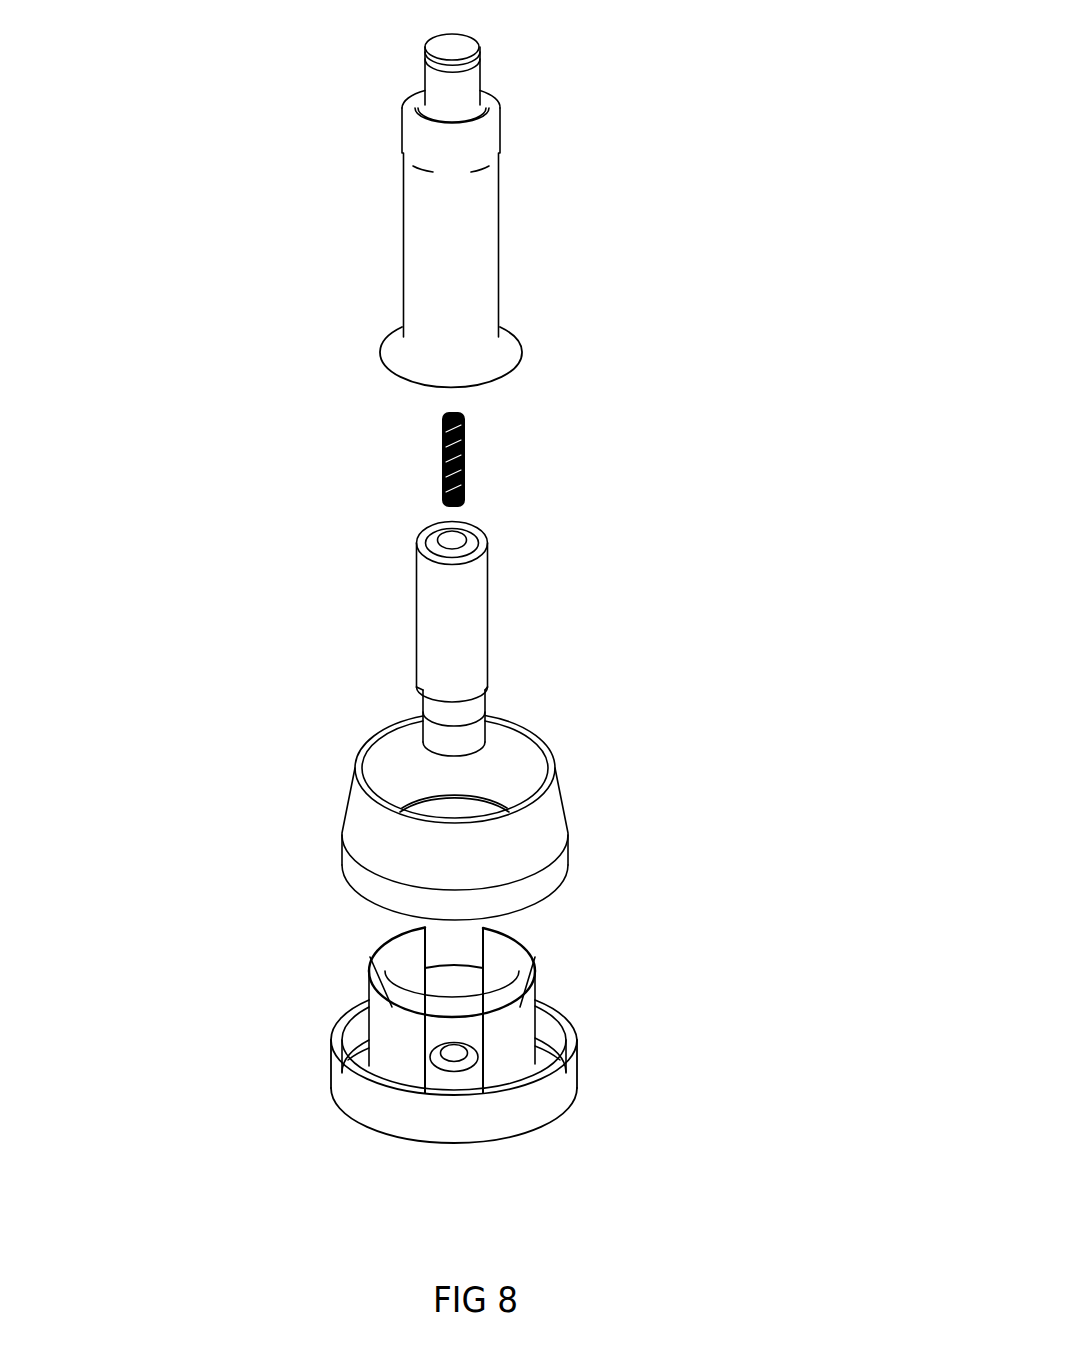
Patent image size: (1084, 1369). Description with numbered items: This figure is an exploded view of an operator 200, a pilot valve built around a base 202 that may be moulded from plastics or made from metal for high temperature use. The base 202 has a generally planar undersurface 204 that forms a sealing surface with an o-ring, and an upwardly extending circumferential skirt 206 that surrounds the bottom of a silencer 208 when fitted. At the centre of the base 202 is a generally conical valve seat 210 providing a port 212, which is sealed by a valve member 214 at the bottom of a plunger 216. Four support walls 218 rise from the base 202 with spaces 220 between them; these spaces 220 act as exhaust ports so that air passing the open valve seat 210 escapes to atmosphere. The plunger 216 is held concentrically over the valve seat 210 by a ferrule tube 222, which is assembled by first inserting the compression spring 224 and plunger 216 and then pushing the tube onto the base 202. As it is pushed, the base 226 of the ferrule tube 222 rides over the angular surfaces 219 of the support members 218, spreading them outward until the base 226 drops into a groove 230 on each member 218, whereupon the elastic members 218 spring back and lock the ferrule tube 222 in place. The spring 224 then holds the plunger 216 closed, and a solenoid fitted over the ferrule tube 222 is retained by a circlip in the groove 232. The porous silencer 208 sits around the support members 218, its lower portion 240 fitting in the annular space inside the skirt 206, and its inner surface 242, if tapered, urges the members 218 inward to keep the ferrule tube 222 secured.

The operator 200 is at (742, 243).
The base 202 is at (577, 1053).
The planar undersurface 204 is at (562, 1113).
The circumferential skirt 206 is at (570, 1013).
The silencer 208 is at (550, 803).
The valve seat 210 is at (452, 1075).
The port 212 is at (464, 1067).
The valve member 214 is at (472, 740).
The plunger 216 is at (480, 613).
The support walls 218 is at (523, 940).
The angular surfaces 219 is at (510, 967).
The spaces 220 is at (455, 958).
The ferrule tube 222 is at (490, 193).
The compression spring 224 is at (470, 462).
The base of ferrule tube 226 is at (527, 343).
The groove 230 is at (390, 1091).
The groove 232 is at (483, 72).
The lower portion of silencer 240 is at (558, 865).
The tapered inner surface 242 is at (523, 763).